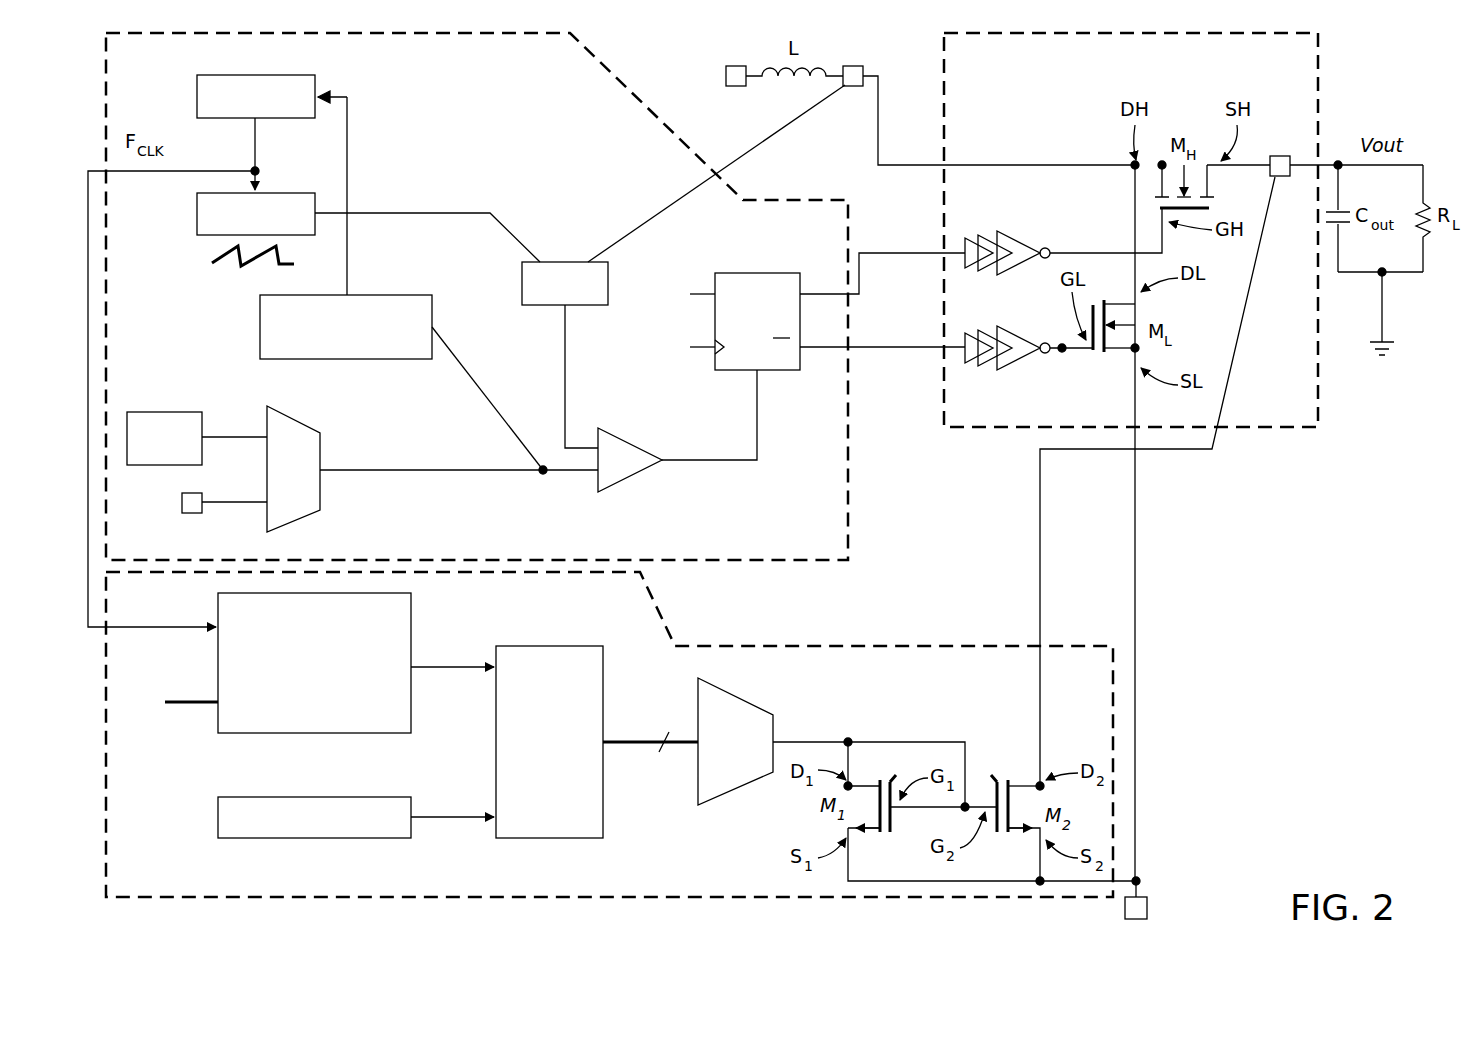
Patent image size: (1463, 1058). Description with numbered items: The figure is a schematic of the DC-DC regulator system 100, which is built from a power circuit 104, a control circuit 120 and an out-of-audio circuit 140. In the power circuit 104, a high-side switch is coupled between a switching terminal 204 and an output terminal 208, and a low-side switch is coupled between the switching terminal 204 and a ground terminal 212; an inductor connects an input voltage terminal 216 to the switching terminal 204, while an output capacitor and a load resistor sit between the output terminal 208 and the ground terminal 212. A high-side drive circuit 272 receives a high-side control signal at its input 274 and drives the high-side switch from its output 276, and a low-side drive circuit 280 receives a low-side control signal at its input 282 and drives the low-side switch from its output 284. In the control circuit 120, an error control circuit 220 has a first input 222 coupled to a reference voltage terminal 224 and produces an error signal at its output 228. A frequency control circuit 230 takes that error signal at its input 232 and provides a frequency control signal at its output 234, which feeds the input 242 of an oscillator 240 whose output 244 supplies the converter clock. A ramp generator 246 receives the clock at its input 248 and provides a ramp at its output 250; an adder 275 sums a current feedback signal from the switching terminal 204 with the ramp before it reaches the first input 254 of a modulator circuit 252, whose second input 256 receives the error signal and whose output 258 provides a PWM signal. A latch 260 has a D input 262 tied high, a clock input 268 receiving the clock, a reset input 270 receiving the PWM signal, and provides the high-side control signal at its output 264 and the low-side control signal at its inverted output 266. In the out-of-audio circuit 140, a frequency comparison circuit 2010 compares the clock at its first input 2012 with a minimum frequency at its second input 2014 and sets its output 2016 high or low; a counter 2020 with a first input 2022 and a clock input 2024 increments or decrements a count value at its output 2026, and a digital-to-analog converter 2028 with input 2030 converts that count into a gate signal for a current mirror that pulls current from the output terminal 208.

The DC-DC regulator system 100 is at (1240, 627).
The power circuit 104 is at (1323, 100).
The control circuit 120 is at (634, 82).
The out-of-audio circuit 140 is at (933, 647).
The switching terminal 204 is at (868, 78).
The output terminal 208 is at (262, 510).
The ground terminal 212 is at (1358, 278).
The input voltage terminal 216 is at (735, 87).
The error control circuit 220 is at (322, 486).
The first input 222 is at (262, 428).
The reference voltage terminal 224 is at (163, 410).
The output 228 is at (325, 463).
The frequency control circuit 230 is at (260, 313).
The input 232 is at (438, 324).
The output 234 is at (352, 290).
The oscillator 240 is at (197, 86).
The input 242 is at (320, 92).
The output 244 is at (252, 168).
The ramp generator 246 is at (197, 204).
The input 248 is at (261, 186).
The output 250 is at (321, 206).
The modulator circuit 252 is at (636, 473).
The first input 254 is at (594, 432).
The second input 256 is at (595, 487).
The output 258 is at (668, 453).
The latch 260 is at (745, 268).
The input 262 is at (711, 284).
The output 264 is at (805, 288).
The inverted output 266 is at (815, 372).
The rising-edge triggered clock input 268 is at (706, 361).
The reset input 270 is at (760, 400).
The high-side drive circuit 272 is at (987, 272).
The input 274 is at (957, 248).
The adder 275 is at (552, 312).
The output 276 is at (1048, 244).
The low-side drive circuit 280 is at (1018, 336).
The input 282 is at (957, 352).
The output 284 is at (1063, 358).
The frequency comparison circuit 2010 is at (312, 737).
The first input 2012 is at (212, 640).
The second input 2014 is at (212, 710).
The output 2016 is at (418, 680).
The counter 2020 is at (548, 645).
The first input 2022 is at (490, 660).
The rising-edge clock-triggered input 2024 is at (490, 828).
The output 2026 is at (616, 735).
The digital-to-analog converter 2028 is at (781, 735).
The input 2030 is at (690, 750).